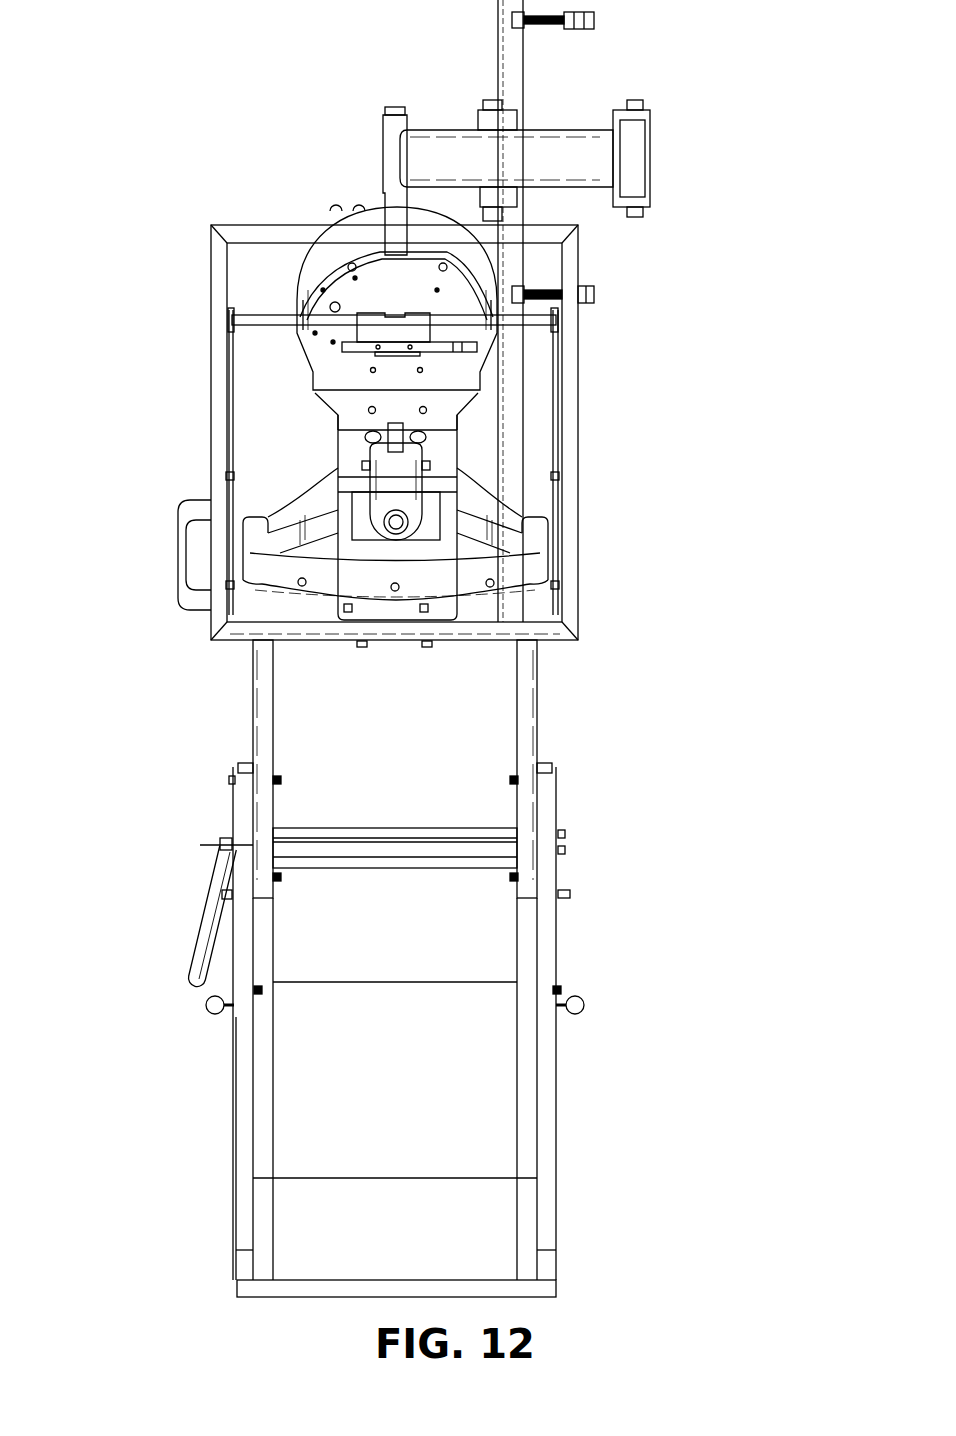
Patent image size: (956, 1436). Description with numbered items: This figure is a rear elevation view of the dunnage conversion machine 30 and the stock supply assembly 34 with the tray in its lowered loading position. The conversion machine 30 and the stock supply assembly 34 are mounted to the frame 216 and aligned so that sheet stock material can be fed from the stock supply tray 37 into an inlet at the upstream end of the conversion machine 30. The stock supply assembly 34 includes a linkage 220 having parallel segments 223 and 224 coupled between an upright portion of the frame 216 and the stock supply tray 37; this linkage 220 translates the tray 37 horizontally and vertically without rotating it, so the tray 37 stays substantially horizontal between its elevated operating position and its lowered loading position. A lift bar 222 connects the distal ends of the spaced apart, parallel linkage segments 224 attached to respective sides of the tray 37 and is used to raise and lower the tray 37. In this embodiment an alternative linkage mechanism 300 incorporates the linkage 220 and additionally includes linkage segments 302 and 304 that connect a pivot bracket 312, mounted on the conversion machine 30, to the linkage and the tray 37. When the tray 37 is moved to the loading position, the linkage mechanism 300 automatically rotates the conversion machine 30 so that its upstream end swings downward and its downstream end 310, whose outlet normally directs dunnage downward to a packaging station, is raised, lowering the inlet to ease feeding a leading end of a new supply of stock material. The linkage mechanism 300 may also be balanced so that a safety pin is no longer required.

The frame 216 is at (222, 267).
The downstream end 310 is at (455, 241).
The pivot bracket 312 is at (393, 322).
The dunnage conversion machine 30 is at (347, 440).
The linkage segment 302 is at (545, 523).
The linkage mechanism 300 is at (474, 323).
The linkage segment 304 is at (527, 700).
The stock supply assembly 34 is at (342, 1007).
The linkage segment 223 is at (245, 815).
The linkage 220 is at (118, 892).
The linkage segment 224 is at (247, 1045).
The stock supply tray 37 is at (298, 1120).
The lift bar 222 is at (271, 1288).